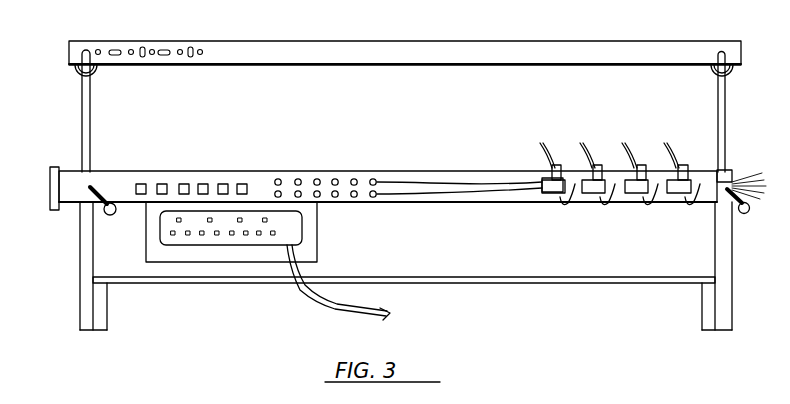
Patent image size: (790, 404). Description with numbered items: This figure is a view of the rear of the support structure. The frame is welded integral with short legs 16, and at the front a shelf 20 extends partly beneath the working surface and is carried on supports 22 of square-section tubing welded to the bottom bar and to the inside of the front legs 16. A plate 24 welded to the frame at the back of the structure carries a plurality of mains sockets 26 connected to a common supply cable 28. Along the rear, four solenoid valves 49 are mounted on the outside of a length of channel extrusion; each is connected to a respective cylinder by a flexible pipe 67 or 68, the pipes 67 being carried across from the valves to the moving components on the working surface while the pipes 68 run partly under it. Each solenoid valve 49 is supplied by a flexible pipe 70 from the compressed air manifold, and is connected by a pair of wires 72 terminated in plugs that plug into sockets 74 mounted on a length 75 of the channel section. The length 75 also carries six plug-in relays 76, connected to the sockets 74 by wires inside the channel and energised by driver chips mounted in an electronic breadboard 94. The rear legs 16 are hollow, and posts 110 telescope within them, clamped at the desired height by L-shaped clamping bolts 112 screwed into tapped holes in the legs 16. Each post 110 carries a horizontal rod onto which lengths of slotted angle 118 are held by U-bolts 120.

The legs 16 is at (82, 232).
The shelf 20 is at (567, 283).
The supports 22 is at (104, 310).
The plate 24 is at (205, 255).
The mains sockets 26 is at (237, 240).
The supply cable 28 is at (333, 316).
The solenoid valves 49 is at (552, 196).
The flexible pipe 67 is at (590, 150).
The flexible pipe 68 is at (672, 150).
The flexible pipe 70 is at (650, 203).
The wires 72 is at (410, 183).
The sockets 74 is at (374, 178).
The length of channel section 75 is at (258, 178).
The plug-in relays 76 is at (184, 183).
The electronic breadboard 94 is at (60, 152).
The posts 110 is at (82, 112).
The clamping bolts 112 is at (102, 198).
The slotted angle 118 is at (739, 42).
The U-bolts 120 is at (93, 72).